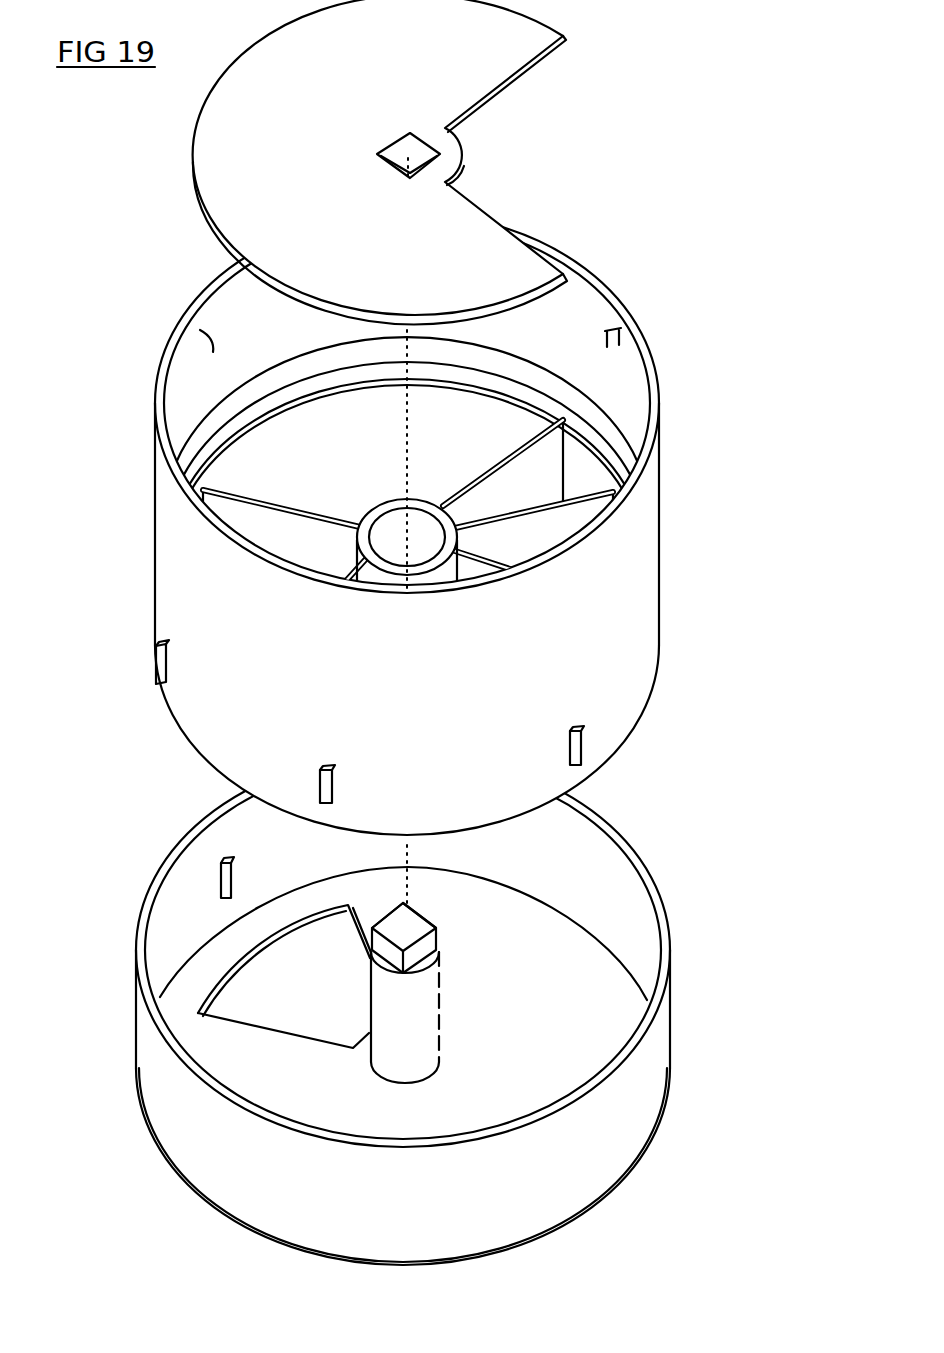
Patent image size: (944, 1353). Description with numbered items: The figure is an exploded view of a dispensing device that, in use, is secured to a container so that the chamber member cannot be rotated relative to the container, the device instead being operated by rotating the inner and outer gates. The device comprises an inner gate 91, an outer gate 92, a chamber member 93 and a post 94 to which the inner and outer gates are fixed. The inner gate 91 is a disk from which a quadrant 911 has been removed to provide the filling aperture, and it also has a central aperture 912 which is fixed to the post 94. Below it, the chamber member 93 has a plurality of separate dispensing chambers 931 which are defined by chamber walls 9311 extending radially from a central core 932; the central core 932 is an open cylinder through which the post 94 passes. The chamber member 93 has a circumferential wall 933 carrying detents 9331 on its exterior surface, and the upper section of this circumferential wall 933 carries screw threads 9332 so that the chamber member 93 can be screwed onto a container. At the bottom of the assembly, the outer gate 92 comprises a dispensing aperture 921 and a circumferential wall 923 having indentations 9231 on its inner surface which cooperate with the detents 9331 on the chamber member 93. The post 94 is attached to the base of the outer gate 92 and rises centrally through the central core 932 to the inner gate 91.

The inner gate 91 is at (562, 71).
The quadrant 911 is at (494, 164).
The central aperture 912 is at (393, 143).
The outer gate 92 is at (662, 860).
The dispensing aperture 921 is at (300, 975).
The circumferential wall 923 is at (650, 1085).
The indentations 9231 is at (230, 861).
The chamber member 93 is at (642, 304).
The dispensing chambers 931 is at (543, 477).
The chamber walls 9311 is at (513, 452).
The central core 932 is at (397, 500).
The circumferential wall 933 is at (646, 595).
The detents 9331 is at (582, 766).
The inner wall ribs 9332 is at (213, 352).
The post 94 is at (433, 1003).